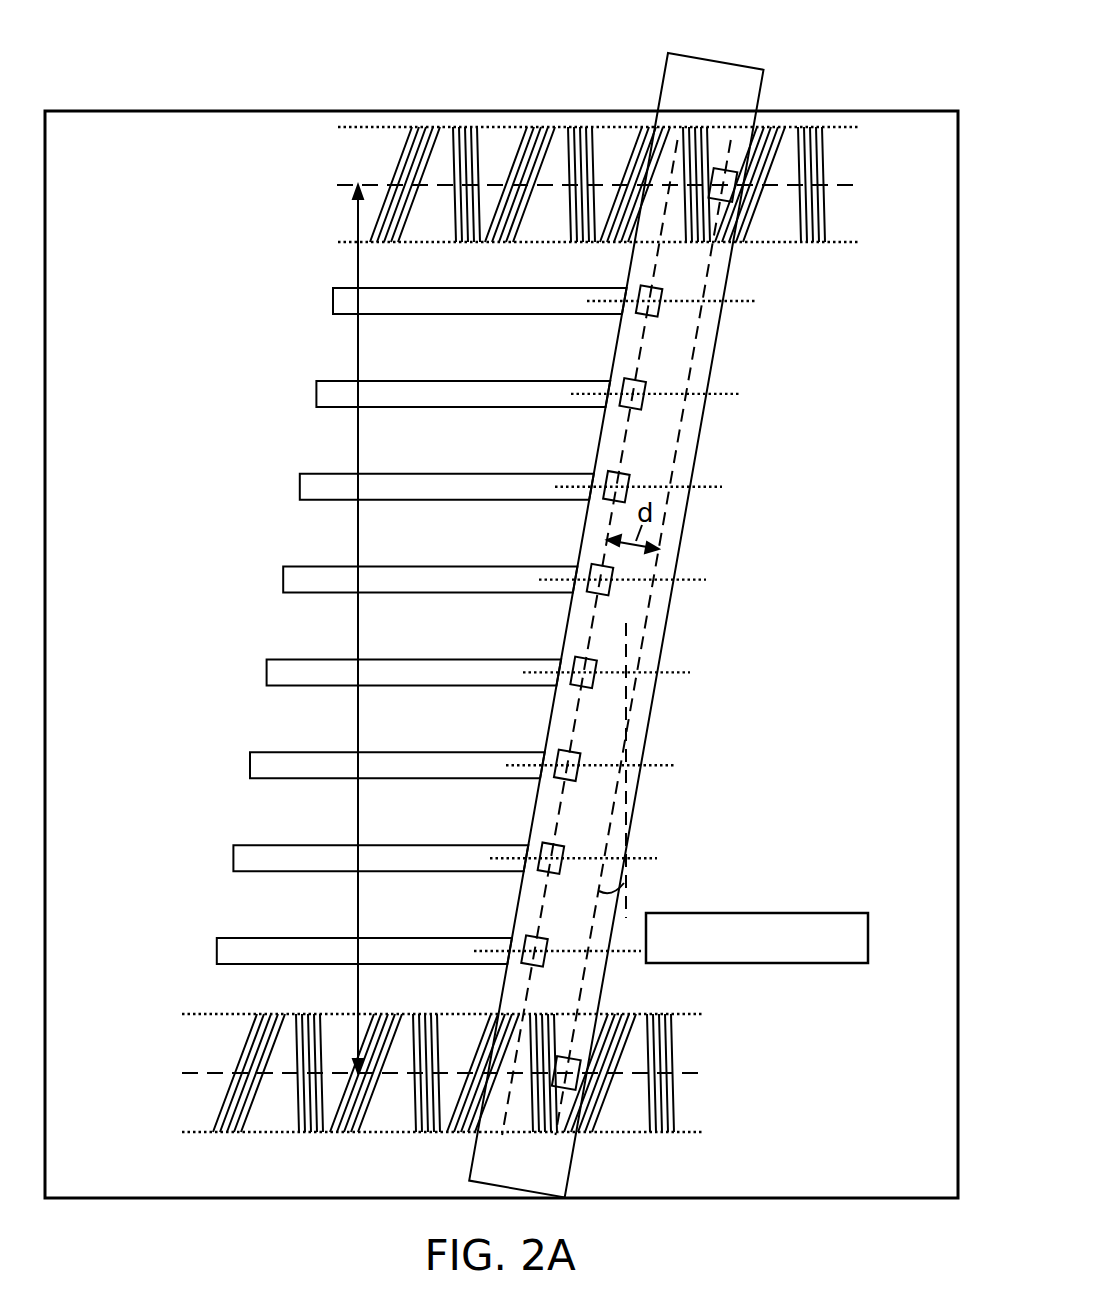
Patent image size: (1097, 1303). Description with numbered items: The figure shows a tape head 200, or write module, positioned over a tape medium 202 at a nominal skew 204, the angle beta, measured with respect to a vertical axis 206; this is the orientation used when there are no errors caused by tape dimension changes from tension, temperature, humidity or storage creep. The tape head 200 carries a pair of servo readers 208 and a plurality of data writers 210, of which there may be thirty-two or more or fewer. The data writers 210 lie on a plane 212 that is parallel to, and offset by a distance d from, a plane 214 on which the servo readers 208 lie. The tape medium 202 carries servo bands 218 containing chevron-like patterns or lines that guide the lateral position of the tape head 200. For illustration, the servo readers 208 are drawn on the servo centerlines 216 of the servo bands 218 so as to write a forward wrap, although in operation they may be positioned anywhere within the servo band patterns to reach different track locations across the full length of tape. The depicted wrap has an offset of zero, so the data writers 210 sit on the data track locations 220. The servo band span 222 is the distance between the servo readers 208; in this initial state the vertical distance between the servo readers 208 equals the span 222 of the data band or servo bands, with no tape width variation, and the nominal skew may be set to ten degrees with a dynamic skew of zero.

The tape head 200 is at (716, 57).
The tape medium 202 is at (302, 108).
The nominal skew 204 is at (625, 878).
The vertical axis 206 is at (628, 650).
The servo readers 208 is at (733, 200).
The data writers 210 is at (648, 290).
The plane 212 is at (674, 163).
The plane 214 is at (721, 157).
The servo centerlines 216 is at (830, 186).
The servo bands 218 is at (395, 126).
The data track locations 220 is at (345, 301).
The servo band span 222 is at (358, 447).